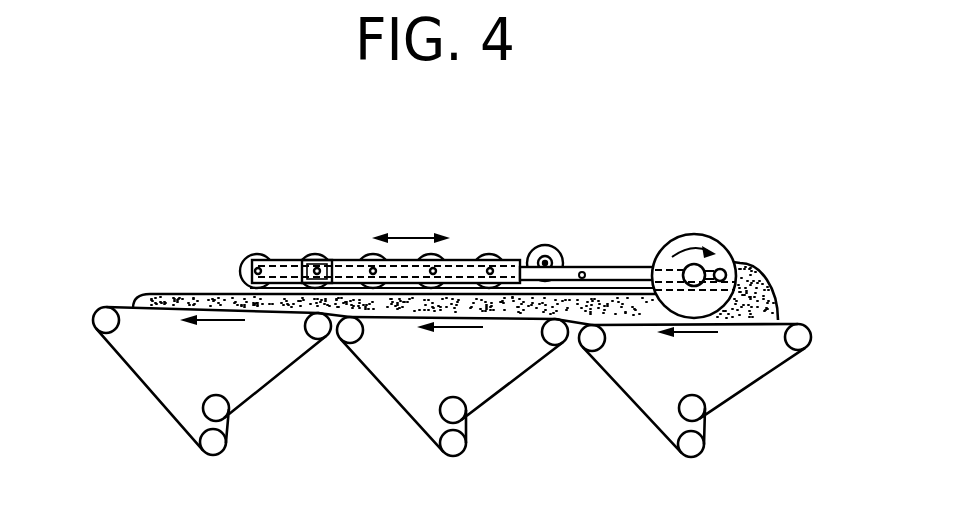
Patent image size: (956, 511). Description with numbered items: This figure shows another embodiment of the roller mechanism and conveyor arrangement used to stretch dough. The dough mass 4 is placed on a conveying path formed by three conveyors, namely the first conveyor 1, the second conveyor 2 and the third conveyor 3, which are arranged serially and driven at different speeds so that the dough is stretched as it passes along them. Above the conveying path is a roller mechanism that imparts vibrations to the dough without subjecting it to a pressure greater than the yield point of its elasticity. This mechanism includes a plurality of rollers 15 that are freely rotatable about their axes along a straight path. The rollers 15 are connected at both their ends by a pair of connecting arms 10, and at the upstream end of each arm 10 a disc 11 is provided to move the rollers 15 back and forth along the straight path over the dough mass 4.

The first conveyor 1 is at (745, 375).
The second conveyor 2 is at (515, 365).
The third conveyor 3 is at (268, 365).
The dough mass 4 is at (770, 266).
The connecting arms 10 is at (283, 268).
The disc 11 is at (688, 236).
The rollers 15 is at (487, 254).